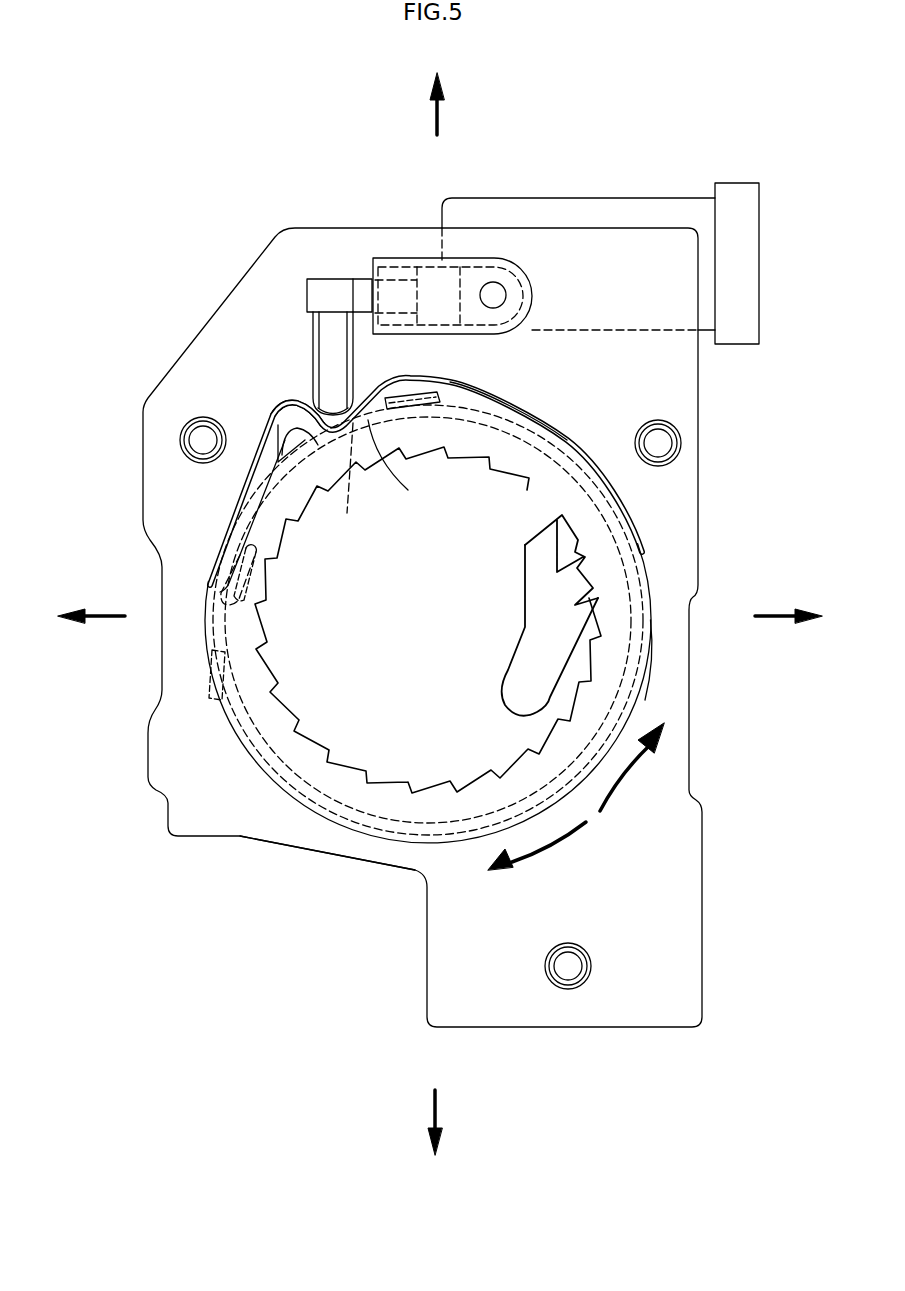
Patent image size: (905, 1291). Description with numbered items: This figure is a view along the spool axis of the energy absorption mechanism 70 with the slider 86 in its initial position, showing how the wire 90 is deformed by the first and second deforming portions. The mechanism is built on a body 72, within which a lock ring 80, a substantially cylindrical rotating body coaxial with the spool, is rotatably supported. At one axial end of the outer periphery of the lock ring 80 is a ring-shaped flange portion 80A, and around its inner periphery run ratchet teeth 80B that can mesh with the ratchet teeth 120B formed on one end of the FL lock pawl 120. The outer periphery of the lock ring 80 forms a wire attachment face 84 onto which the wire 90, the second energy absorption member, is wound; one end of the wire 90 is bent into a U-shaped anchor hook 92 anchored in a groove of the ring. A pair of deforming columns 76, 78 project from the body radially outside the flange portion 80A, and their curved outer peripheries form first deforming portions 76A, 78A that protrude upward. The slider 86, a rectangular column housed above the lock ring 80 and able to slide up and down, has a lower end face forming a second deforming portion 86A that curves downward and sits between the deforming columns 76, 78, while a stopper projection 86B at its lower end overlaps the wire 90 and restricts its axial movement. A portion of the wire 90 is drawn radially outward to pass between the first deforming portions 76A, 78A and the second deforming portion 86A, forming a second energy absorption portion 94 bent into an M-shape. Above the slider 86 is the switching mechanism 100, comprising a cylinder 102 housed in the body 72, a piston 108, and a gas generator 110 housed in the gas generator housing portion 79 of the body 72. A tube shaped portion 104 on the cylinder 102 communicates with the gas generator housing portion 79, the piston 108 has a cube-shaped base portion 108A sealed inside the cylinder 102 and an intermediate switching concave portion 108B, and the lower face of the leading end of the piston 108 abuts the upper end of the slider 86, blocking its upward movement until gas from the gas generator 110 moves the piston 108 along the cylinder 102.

The energy absorption mechanism 70 is at (422, 627).
The body 72 is at (327, 847).
The deforming column 76 is at (277, 438).
The first deforming portion 76A is at (288, 400).
The deforming column 78 is at (426, 459).
The first deforming portion 78A is at (400, 385).
The gas generator housing portion 79 is at (540, 197).
The lock ring 80 is at (490, 607).
The flange portion 80A is at (653, 648).
The ratchet teeth 80B is at (552, 508).
The wire attachment face 84 is at (560, 445).
The slider 86 is at (304, 326).
The second deforming portion 86A is at (300, 348).
The stopper projection 86B is at (370, 483).
The wire 90 is at (513, 410).
The anchor hook 92 is at (250, 585).
The second energy absorption portion 94 is at (405, 464).
The switching mechanism 100 is at (288, 178).
The cylinder 102 is at (400, 262).
The tube shaped portion 104 is at (475, 258).
The piston 108 is at (302, 232).
The base portion 108A is at (440, 305).
The switching concave portion 108B is at (363, 293).
The gas generator 110 is at (735, 183).
The FL lock pawl 120 is at (611, 593).
The ratchet teeth 120B is at (573, 543).